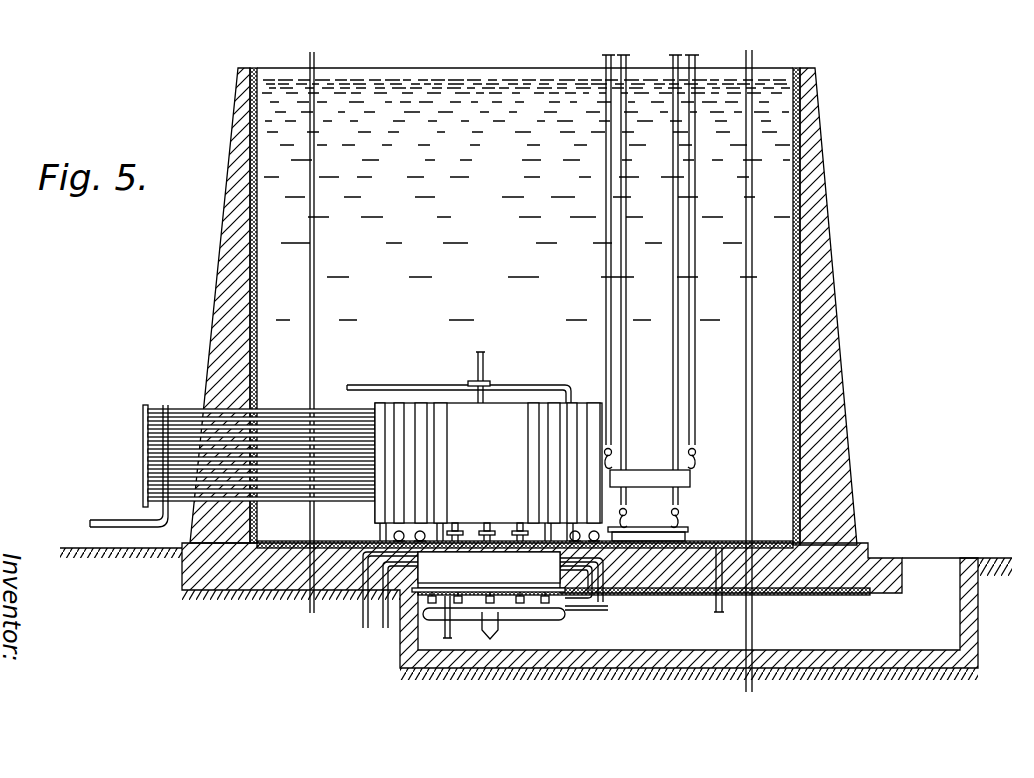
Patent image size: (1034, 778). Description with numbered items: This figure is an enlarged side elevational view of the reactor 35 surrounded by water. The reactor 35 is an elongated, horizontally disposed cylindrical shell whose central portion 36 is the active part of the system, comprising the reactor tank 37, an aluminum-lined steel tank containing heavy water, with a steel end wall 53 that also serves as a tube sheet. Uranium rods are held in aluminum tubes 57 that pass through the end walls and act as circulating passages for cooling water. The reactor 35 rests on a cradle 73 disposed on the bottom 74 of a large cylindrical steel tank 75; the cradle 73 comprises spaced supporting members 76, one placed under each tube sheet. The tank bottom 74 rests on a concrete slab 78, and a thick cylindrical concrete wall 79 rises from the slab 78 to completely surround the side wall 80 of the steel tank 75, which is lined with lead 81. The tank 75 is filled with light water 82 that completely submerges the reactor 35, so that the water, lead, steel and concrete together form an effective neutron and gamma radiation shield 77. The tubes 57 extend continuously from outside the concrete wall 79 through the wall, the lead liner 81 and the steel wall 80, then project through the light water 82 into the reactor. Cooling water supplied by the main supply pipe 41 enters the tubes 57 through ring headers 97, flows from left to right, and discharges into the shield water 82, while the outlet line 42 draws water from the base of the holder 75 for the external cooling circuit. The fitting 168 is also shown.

The light water 82 is at (430, 86).
The lead liner 81 is at (256, 237).
The side wall of steel tank 80 is at (808, 216).
The concrete wall 79 is at (844, 306).
The radiation shield 77 is at (848, 306).
The steel tank 75 is at (848, 306).
The concrete slab 78 is at (795, 563).
The tank bottom 74 is at (755, 548).
The outlet line 42 is at (717, 613).
The cradle 73 is at (536, 550).
The supporting member 76 is at (382, 536).
The reactor 35 is at (462, 457).
The end wall 53 is at (447, 452).
The central portion of reactor 36 is at (528, 404).
The reactor tank 37 is at (490, 403).
The valve 168 is at (478, 376).
The ring header 97 is at (161, 406).
The tubes 57 is at (186, 407).
The main supply pipe 41 is at (108, 520).